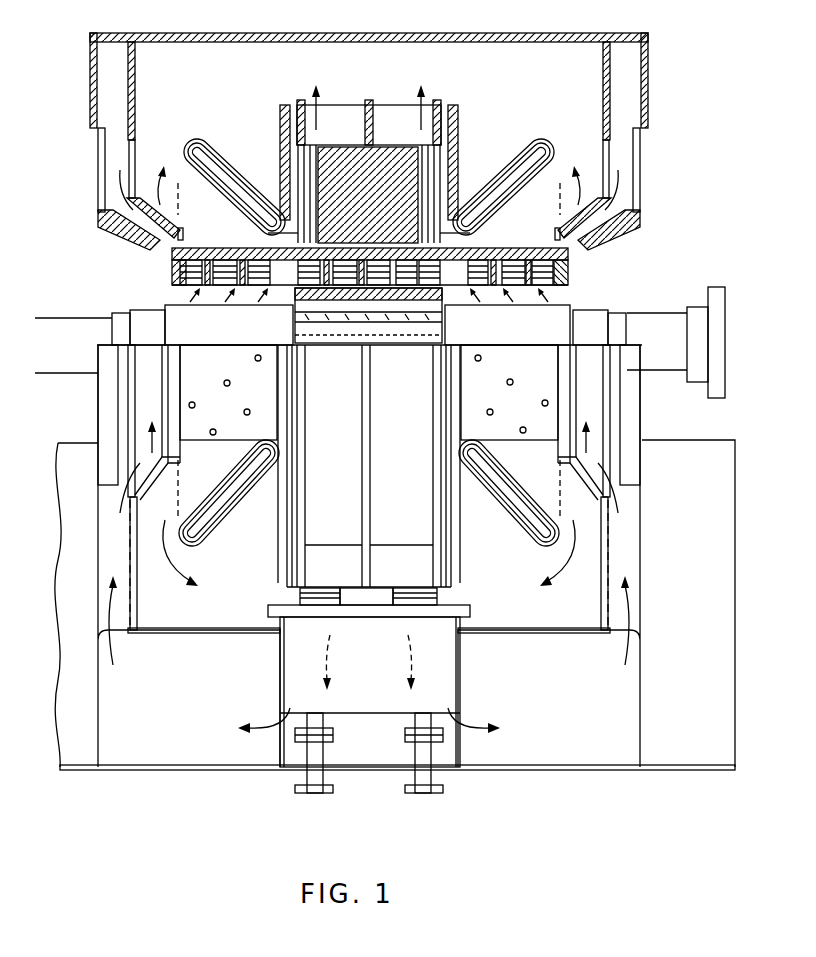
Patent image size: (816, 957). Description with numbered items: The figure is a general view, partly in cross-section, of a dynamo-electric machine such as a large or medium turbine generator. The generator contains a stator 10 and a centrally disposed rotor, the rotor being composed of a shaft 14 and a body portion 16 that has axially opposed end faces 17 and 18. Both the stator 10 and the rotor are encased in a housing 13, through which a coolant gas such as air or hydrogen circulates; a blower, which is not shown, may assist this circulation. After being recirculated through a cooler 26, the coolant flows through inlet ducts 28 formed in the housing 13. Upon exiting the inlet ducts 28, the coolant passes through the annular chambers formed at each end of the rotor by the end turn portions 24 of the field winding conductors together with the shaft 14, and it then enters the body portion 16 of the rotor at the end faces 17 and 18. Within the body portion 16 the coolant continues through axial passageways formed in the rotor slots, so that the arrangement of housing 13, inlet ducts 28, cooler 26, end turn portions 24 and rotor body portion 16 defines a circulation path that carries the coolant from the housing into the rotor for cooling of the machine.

The stator 10 is at (342, 150).
The housing 13 is at (470, 33).
The shaft 14 is at (657, 313).
The body portion 16 is at (368, 247).
The end face 17 is at (293, 316).
The end face 18 is at (442, 312).
The end turn portions 24 is at (213, 298).
The cooler 26 is at (370, 748).
The inlet ducts 28 is at (108, 88).